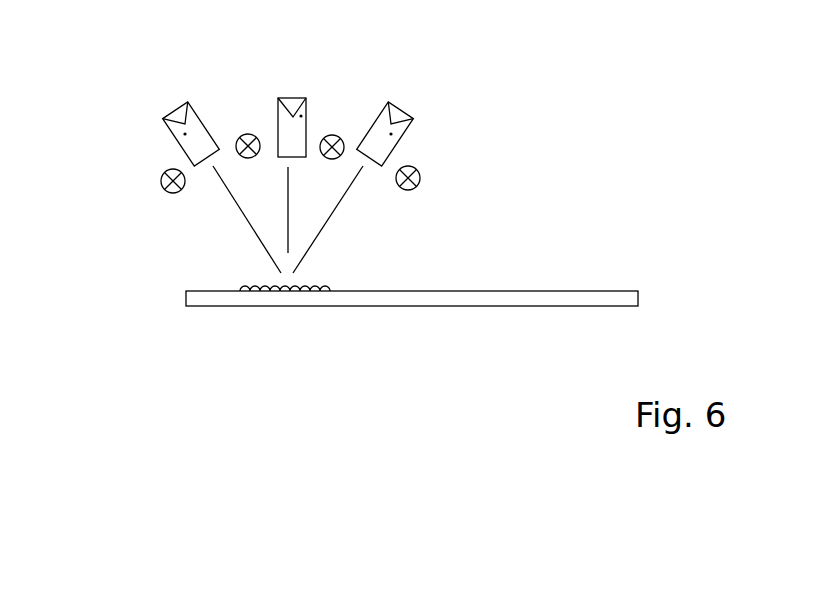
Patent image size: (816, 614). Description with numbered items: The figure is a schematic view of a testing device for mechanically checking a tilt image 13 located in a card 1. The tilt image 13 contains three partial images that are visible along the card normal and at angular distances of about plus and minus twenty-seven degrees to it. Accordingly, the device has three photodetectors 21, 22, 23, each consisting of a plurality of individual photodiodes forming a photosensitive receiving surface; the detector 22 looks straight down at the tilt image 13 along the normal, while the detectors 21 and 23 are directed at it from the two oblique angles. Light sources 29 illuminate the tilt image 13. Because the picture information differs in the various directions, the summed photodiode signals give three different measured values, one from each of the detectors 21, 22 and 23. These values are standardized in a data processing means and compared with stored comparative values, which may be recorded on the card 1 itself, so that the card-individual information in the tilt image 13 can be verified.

The card 1 is at (412, 333).
The tilt image 13 is at (266, 330).
The photodetector 21 is at (163, 162).
The photodetector 22 is at (334, 128).
The photodetector 23 is at (411, 164).
The light sources 29 is at (287, 152).